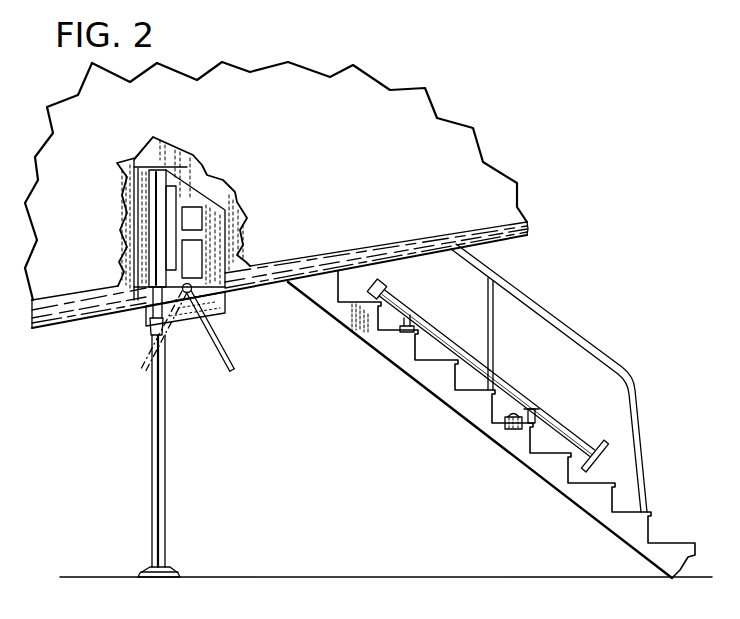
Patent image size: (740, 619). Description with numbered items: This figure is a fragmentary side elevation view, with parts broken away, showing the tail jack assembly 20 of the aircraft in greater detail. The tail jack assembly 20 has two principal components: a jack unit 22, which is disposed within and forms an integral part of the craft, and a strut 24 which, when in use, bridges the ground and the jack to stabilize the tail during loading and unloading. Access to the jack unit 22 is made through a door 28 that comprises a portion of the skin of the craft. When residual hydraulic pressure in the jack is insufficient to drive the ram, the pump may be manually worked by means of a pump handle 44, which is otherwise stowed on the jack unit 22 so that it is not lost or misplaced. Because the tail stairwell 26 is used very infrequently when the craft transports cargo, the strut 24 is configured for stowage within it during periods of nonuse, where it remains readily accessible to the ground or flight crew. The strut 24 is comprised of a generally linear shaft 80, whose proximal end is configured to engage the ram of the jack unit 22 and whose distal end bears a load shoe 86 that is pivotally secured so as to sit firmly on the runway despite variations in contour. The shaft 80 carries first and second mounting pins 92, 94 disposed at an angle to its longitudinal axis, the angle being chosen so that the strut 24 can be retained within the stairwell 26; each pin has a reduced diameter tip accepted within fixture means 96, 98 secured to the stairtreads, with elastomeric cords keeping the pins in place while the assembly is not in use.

The tail jack assembly 20 is at (116, 349).
The jack unit 22 is at (212, 235).
The strut 24 is at (170, 478).
The tail stairwell 26 is at (419, 387).
The door 28 is at (226, 306).
The pump handle 44 is at (222, 345).
The shaft 80 is at (508, 388).
The load shoe 86 is at (172, 566).
The first mounting pin 92 is at (428, 319).
The second mounting pin 94 is at (536, 410).
The fixture means 96 is at (402, 332).
The fixture means 98 is at (504, 424).